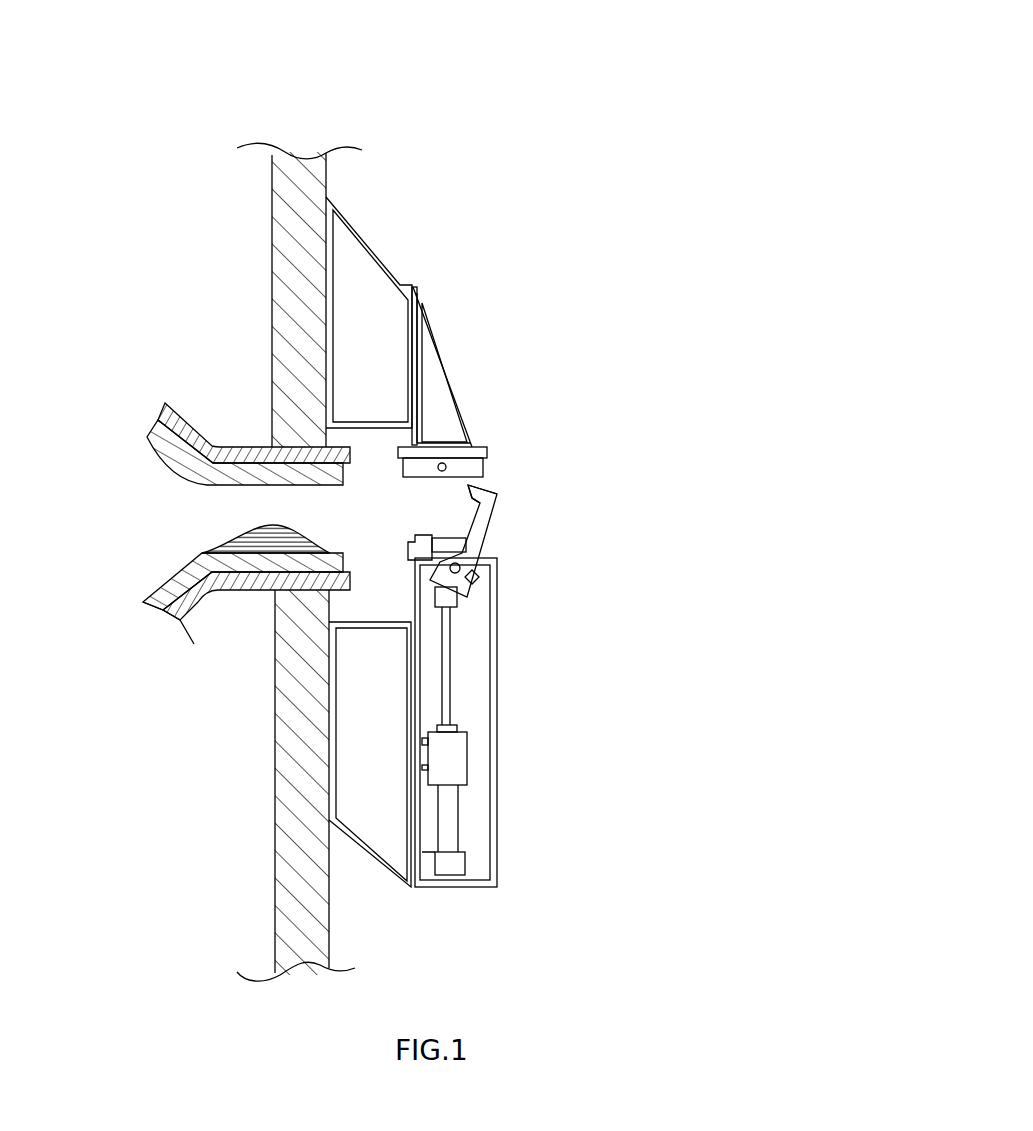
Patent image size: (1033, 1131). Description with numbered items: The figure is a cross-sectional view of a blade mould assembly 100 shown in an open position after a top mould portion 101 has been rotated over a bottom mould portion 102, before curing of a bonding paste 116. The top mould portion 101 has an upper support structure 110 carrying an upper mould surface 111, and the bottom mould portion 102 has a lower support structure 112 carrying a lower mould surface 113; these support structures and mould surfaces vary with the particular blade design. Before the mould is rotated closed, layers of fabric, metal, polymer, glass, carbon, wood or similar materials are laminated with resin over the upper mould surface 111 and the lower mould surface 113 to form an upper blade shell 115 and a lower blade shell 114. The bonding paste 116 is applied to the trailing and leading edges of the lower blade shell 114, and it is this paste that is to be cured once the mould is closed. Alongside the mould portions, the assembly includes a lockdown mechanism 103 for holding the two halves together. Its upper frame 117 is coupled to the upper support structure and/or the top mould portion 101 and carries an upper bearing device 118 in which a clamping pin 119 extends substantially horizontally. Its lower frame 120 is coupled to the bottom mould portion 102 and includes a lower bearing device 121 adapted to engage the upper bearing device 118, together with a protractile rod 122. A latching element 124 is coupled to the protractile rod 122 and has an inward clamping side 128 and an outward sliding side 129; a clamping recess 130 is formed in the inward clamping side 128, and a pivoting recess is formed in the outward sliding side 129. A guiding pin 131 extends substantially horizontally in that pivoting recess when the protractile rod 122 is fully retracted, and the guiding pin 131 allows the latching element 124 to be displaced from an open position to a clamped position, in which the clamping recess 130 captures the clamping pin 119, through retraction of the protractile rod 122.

The blade mould assembly 100 is at (648, 107).
The top mould portion 101 is at (194, 149).
The bottom mould portion 102 is at (190, 963).
The lockdown mechanism 103 is at (714, 527).
The upper support structure 110 is at (288, 265).
The upper mould surface 111 is at (267, 447).
The lower support structure 112 is at (290, 835).
The lower mould surface 113 is at (222, 601).
The lower blade shell 114 is at (157, 605).
The upper blade shell 115 is at (160, 433).
The bonding paste 116 is at (253, 537).
The upper frame 117 is at (436, 346).
The upper bearing device 118 is at (483, 467).
The clamping pin 119 is at (440, 458).
The lower frame 120 is at (496, 825).
The lower bearing device 121 is at (422, 537).
The protractile rod 122 is at (450, 708).
The latching element 124 is at (488, 513).
The inward clamping side 128 is at (484, 512).
The outward sliding side 129 is at (472, 542).
The clamping recess 130 is at (465, 510).
The guiding pin 131 is at (480, 578).